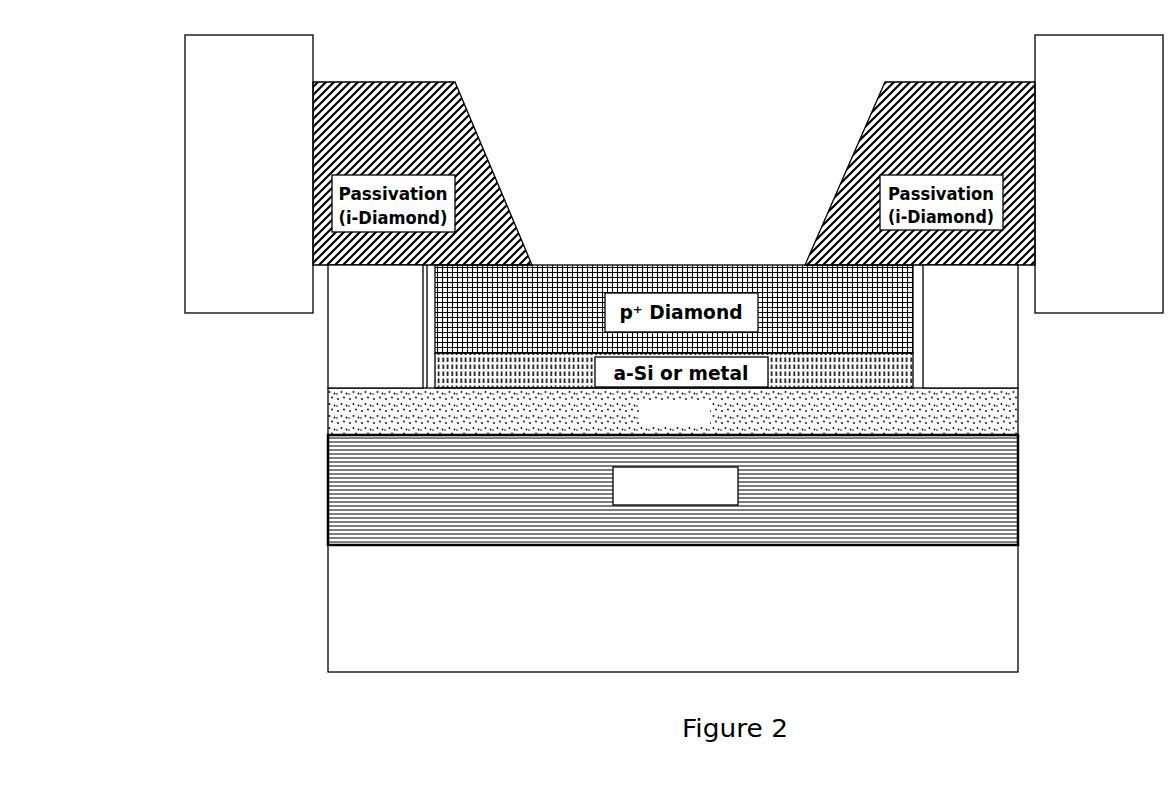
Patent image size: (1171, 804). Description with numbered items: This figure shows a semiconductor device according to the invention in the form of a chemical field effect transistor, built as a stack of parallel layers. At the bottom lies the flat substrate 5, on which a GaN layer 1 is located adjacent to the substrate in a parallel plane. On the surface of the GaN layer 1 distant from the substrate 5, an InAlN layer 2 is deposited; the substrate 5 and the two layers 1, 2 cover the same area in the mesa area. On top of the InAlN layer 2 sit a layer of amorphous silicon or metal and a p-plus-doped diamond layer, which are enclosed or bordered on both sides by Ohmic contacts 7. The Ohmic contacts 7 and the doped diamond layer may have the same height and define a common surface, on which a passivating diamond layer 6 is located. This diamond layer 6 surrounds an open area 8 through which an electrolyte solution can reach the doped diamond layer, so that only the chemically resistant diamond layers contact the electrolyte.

The GaN layer 1 is at (975, 495).
The InAlN layer 2 is at (973, 407).
The substrate 5 is at (973, 592).
The diamond layer 6 is at (337, 156).
The Ohmic contacts 7 is at (352, 342).
The open area 8 is at (700, 117).